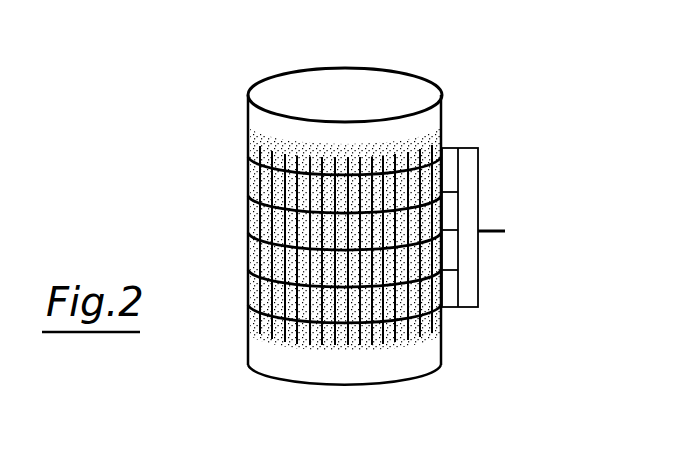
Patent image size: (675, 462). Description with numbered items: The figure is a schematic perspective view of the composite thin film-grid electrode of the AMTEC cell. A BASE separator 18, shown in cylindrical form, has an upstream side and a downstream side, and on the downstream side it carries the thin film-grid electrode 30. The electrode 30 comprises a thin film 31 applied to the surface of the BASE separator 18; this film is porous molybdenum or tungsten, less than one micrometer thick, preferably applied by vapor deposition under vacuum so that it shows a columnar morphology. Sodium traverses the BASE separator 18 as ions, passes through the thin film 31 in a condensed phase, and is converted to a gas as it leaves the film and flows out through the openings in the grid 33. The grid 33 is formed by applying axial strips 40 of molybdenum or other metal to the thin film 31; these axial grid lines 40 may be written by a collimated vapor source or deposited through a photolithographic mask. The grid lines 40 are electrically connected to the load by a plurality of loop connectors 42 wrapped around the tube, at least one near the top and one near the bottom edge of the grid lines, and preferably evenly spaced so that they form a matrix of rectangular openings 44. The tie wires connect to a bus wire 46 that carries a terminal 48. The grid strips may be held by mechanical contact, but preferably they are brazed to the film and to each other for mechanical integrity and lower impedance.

The BASE separator 18 is at (403, 357).
The thin film-grid electrode 30 is at (337, 281).
The thin film 31 is at (305, 345).
The grid 33 is at (337, 257).
The axial strips 40 is at (442, 323).
The loop connectors 42 is at (499, 194).
The rectangular openings 44 is at (362, 313).
The bus wire 46 is at (467, 207).
The terminal 48 is at (497, 233).